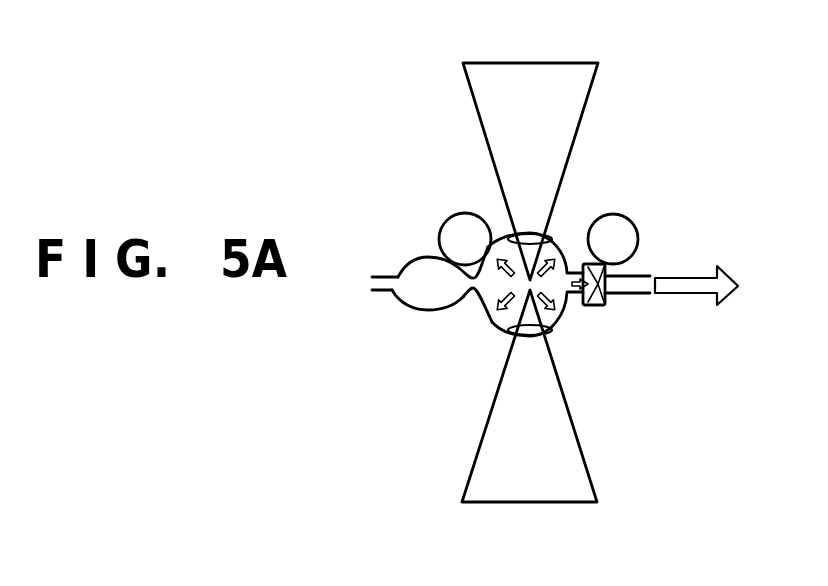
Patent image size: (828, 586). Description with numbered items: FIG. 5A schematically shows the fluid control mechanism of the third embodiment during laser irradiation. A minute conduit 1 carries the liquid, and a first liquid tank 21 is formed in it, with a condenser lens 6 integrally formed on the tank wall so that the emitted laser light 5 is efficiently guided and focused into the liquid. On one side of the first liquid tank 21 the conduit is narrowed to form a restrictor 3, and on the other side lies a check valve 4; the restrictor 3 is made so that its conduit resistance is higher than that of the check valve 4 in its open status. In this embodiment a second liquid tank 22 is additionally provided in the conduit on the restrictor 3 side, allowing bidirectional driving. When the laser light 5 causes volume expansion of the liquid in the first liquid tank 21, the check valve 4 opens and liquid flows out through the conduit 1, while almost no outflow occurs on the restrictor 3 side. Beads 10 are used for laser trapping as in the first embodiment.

The conduit 1 is at (385, 293).
The restrictor 3 is at (470, 296).
The check valve 4 is at (597, 306).
The laser light 5 is at (531, 78).
The condenser lens 6 is at (518, 236).
The beads 10 is at (622, 233).
The first liquid tank 21 is at (507, 320).
The second liquid tank 22 is at (418, 267).